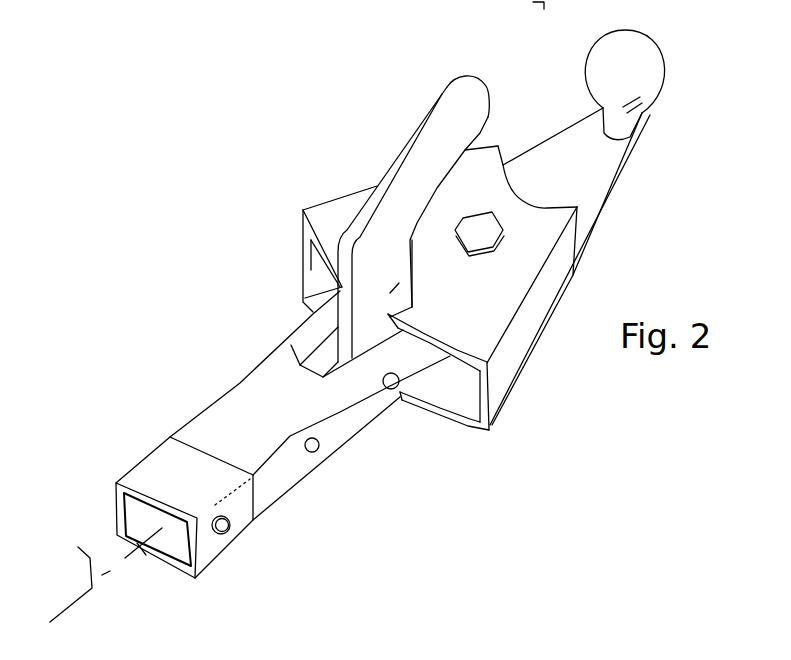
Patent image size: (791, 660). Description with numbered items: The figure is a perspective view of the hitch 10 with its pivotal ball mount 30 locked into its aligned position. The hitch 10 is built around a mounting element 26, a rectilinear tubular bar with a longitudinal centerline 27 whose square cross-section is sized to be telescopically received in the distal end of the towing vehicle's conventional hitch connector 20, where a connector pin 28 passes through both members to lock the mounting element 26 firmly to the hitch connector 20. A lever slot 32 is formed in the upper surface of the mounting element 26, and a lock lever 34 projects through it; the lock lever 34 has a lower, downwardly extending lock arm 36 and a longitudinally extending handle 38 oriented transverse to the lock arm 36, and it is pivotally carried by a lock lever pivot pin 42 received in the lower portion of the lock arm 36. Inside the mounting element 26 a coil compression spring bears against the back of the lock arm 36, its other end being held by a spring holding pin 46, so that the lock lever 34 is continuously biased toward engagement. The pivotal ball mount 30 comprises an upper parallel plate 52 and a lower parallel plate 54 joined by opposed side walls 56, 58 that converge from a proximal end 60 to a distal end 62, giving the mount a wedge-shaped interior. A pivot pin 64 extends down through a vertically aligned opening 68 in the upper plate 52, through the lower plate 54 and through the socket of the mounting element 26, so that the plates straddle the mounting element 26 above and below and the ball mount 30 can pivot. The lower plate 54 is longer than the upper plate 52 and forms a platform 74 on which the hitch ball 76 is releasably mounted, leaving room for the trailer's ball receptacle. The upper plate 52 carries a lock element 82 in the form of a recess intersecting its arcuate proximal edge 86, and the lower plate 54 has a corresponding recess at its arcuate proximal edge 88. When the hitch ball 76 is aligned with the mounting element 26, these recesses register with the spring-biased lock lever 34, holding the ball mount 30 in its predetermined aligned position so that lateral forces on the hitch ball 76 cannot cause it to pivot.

The hitch 10 is at (322, 118).
The hitch connector 20 is at (153, 454).
The mounting element 26 is at (229, 394).
The longitudinal centerline 27 is at (80, 578).
The connector pin 28 is at (226, 535).
The pivotal ball mount 30 is at (526, 386).
The lever slot 32 is at (321, 355).
The lock lever 34 is at (410, 127).
The lock arm 36 is at (407, 260).
The handle 38 is at (447, 83).
The lock lever pivot pin 42 is at (395, 389).
The spring holding pin 46 is at (314, 452).
The upper parallel plate 52 is at (533, 257).
The lower parallel plate 54 is at (603, 188).
The side wall 56 is at (542, 320).
The side wall 58 is at (312, 273).
The proximal end 60 is at (473, 334).
The distal end 62 is at (487, 178).
The pivot pin 64 is at (482, 222).
The opening 68 is at (460, 386).
The platform 74 is at (563, 143).
The hitch ball 76 is at (683, 22).
The lock element 82 is at (398, 313).
The proximal edge 86 is at (320, 258).
The proximal edge 88 is at (420, 403).